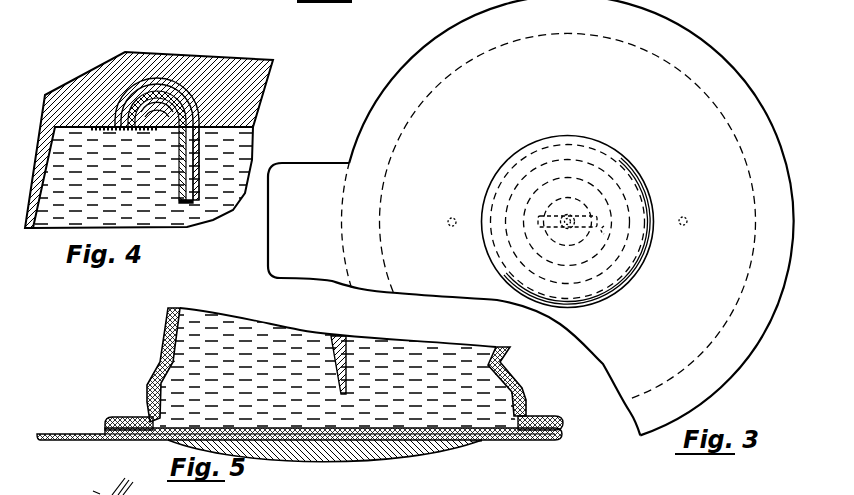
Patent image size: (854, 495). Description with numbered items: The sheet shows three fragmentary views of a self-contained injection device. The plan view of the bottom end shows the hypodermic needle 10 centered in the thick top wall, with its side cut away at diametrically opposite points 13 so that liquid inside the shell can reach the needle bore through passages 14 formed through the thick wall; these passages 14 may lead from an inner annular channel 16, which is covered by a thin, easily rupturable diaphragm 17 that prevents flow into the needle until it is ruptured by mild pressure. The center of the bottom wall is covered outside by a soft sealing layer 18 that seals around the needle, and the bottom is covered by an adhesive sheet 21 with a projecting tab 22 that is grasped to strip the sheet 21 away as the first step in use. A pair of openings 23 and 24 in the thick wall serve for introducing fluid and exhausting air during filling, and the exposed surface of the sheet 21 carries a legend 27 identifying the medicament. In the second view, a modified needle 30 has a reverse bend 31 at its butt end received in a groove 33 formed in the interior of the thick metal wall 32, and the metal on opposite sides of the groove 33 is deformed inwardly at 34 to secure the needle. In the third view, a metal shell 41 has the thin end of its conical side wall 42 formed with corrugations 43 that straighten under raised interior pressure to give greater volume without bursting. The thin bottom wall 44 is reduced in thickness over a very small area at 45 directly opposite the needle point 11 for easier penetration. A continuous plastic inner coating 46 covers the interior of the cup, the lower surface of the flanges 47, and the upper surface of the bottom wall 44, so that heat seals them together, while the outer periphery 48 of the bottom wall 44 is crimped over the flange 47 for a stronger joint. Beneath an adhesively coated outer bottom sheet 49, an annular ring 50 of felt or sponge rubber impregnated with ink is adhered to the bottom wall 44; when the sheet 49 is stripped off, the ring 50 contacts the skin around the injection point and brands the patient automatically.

In FIG. 3, the hypodermic needle 10 is at (580, 233).
In FIG. 5, the hypodermic needle 10 is at (345, 365).
In FIG. 5, the pointed lower end 11 is at (347, 394).
In FIG. 3, the cut-away openings 13 is at (537, 217).
In FIG. 3, the passages 14 is at (545, 228).
In FIG. 3, the inner annular channel 16 is at (608, 232).
In FIG. 3, the diaphragm 17 is at (608, 177).
In FIG. 3, the sealing layer 18 is at (615, 283).
In FIG. 3, the sheet 21 is at (442, 206).
In FIG. 3, the tab 22 is at (305, 244).
In FIG. 3, the opening 23 is at (448, 226).
In FIG. 3, the opening 24 is at (687, 217).
In FIG. 3, the legend 27 is at (495, 117).
In FIG. 4, the modified needle 30 is at (178, 178).
In FIG. 4, the reverse bend 31 is at (189, 82).
In FIG. 4, the thick wall 32 is at (258, 86).
In FIG. 4, the groove 33 is at (162, 103).
In FIG. 4, the deformed metal 34 is at (168, 126).
In FIG. 5, the metal shell 41 is at (320, 365).
In FIG. 5, the conical side wall 42 is at (320, 365).
In FIG. 5, the corrugations 43 is at (532, 360).
In FIG. 5, the thin bottom wall 44 is at (531, 438).
In FIG. 5, the reduced thickness area 45 is at (342, 426).
In FIG. 5, the inner coating 46 is at (175, 361).
In FIG. 5, the flanges 47 is at (565, 420).
In FIG. 5, the outer periphery 48 is at (566, 428).
In FIG. 5, the outer bottom layer of sheet material 49 is at (384, 450).
In FIG. 5, the annular ring 50 is at (478, 445).